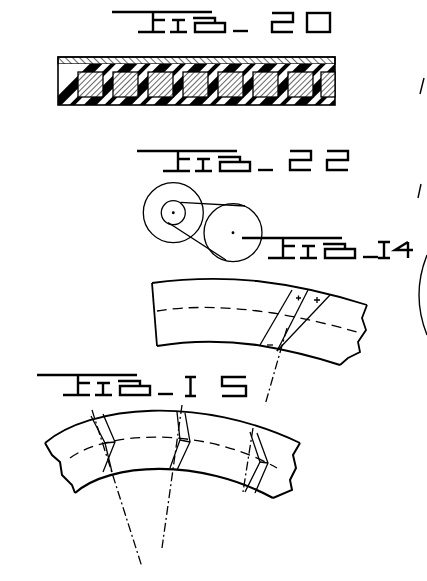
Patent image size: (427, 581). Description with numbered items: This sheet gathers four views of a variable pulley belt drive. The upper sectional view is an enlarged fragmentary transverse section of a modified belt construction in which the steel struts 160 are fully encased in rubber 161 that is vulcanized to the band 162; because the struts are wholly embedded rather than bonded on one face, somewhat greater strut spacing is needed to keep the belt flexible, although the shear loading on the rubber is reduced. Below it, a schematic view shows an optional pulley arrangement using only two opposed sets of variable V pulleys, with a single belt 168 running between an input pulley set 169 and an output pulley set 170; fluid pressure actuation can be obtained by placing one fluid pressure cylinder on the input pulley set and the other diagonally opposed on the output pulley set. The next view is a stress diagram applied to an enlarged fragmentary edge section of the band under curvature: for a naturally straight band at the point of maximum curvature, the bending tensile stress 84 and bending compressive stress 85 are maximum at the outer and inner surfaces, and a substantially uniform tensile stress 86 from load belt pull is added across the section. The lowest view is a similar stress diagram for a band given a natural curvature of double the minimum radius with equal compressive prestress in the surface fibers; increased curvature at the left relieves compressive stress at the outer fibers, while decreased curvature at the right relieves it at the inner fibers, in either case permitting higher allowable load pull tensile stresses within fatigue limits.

In FIG. 20, the struts 160 is at (318, 105).
In FIG. 20, the rubber 161 is at (252, 105).
In FIG. 20, the band 162 is at (330, 57).
In FIG. 22, the belt 168 is at (212, 203).
In FIG. 22, the input pulley set 169 is at (150, 192).
In FIG. 22, the output pulley set 170 is at (262, 222).
In FIG. 14, the bending tensile stress 84 is at (312, 289).
In FIG. 14, the bending compressive stress 85 is at (274, 350).
In FIG. 14, the uniform tensile stress 86 is at (314, 295).